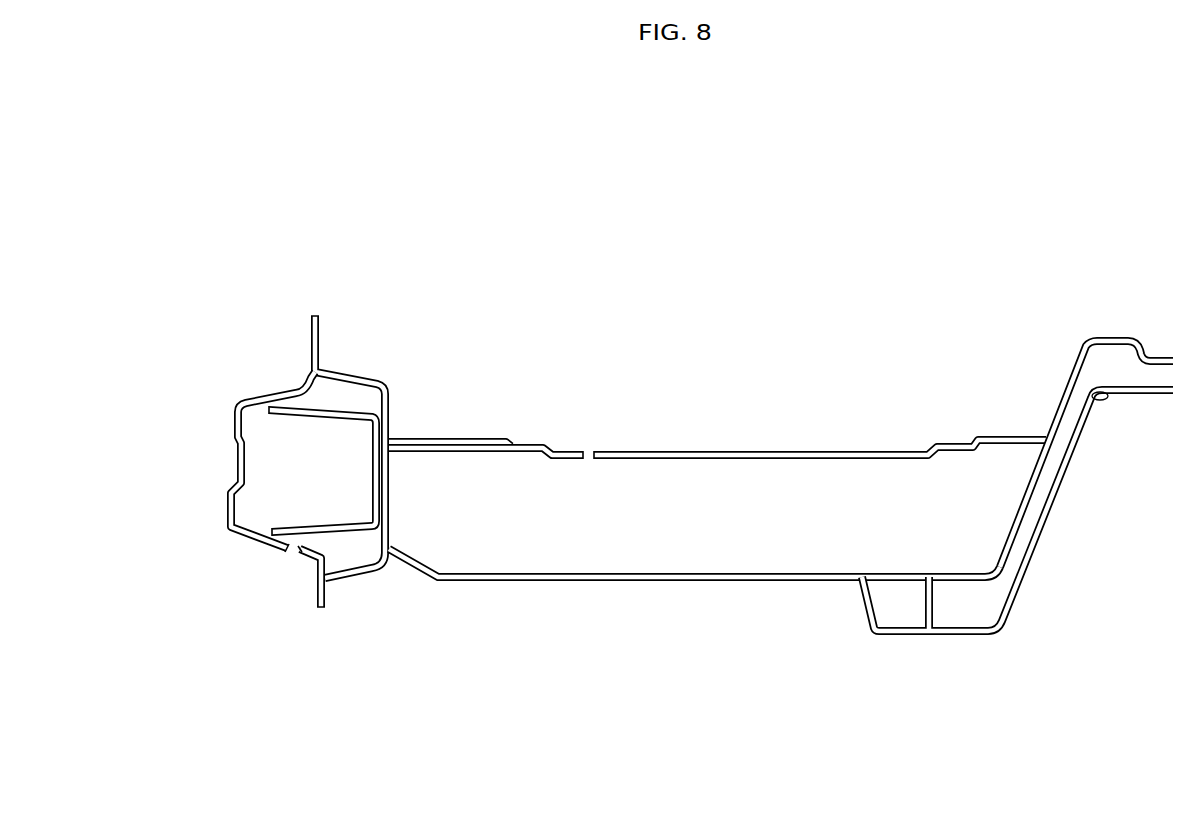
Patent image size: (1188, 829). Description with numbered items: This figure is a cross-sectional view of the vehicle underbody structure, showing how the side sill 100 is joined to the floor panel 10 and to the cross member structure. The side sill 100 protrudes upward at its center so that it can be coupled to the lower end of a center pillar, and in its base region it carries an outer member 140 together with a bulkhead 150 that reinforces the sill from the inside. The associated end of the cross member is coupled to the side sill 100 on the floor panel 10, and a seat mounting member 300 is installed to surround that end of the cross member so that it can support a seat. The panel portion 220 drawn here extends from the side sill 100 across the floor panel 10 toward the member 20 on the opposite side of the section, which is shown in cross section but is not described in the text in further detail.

The floor panel 10 is at (622, 582).
The side sill panel 20 is at (1113, 336).
The side sill 100 is at (263, 492).
The outer member 140 is at (230, 512).
The bulkhead 150 is at (293, 453).
The cross member panel 220 is at (658, 456).
The seat mounting member 300 is at (453, 440).